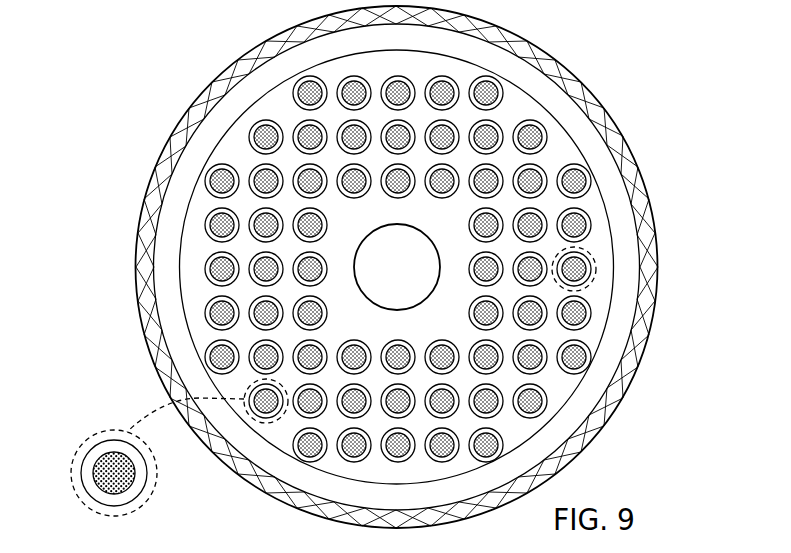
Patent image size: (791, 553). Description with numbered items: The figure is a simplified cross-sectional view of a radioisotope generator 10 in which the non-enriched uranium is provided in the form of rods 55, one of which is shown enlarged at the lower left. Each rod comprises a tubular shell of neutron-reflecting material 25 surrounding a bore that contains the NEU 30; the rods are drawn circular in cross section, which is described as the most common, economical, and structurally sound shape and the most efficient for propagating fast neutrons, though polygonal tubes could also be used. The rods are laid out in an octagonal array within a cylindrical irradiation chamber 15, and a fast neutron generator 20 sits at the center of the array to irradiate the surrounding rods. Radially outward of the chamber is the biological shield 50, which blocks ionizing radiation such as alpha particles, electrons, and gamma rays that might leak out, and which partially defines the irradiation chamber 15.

The radioisotope generator 10 is at (390, 267).
The irradiation chamber 15 is at (548, 100).
The fast neutron generator 20 is at (400, 225).
The neutron-reflecting material 25 is at (625, 246).
The NEU 30 is at (112, 442).
The biological shield 50 is at (627, 150).
The rods 55 is at (136, 495).